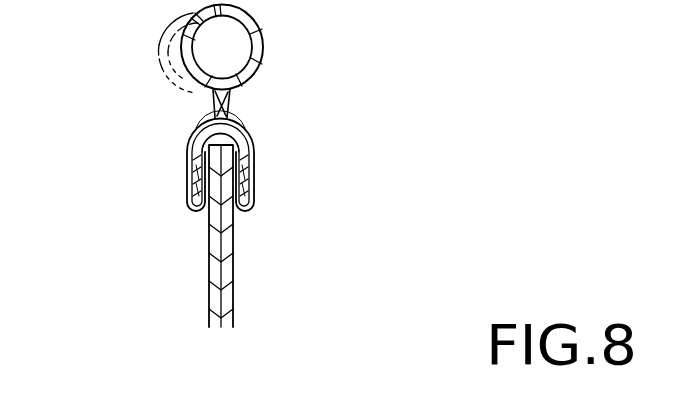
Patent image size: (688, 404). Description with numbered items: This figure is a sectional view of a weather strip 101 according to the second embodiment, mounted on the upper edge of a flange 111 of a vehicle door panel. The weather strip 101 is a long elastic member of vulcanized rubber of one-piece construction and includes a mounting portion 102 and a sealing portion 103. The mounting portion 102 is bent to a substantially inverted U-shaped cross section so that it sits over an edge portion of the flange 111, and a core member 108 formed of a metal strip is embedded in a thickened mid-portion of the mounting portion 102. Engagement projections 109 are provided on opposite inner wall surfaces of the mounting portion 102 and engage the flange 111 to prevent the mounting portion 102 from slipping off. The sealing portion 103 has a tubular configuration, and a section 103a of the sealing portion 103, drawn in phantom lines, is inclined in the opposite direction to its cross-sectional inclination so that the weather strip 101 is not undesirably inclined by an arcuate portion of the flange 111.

The weather strip 101 is at (269, 59).
The mounting portion 102 is at (221, 212).
The sealing portion 103 is at (263, 60).
The section of the sealing portion 103a is at (160, 50).
The core member 108 is at (190, 163).
The engagement projections 109 is at (206, 190).
The flange 111 is at (225, 270).